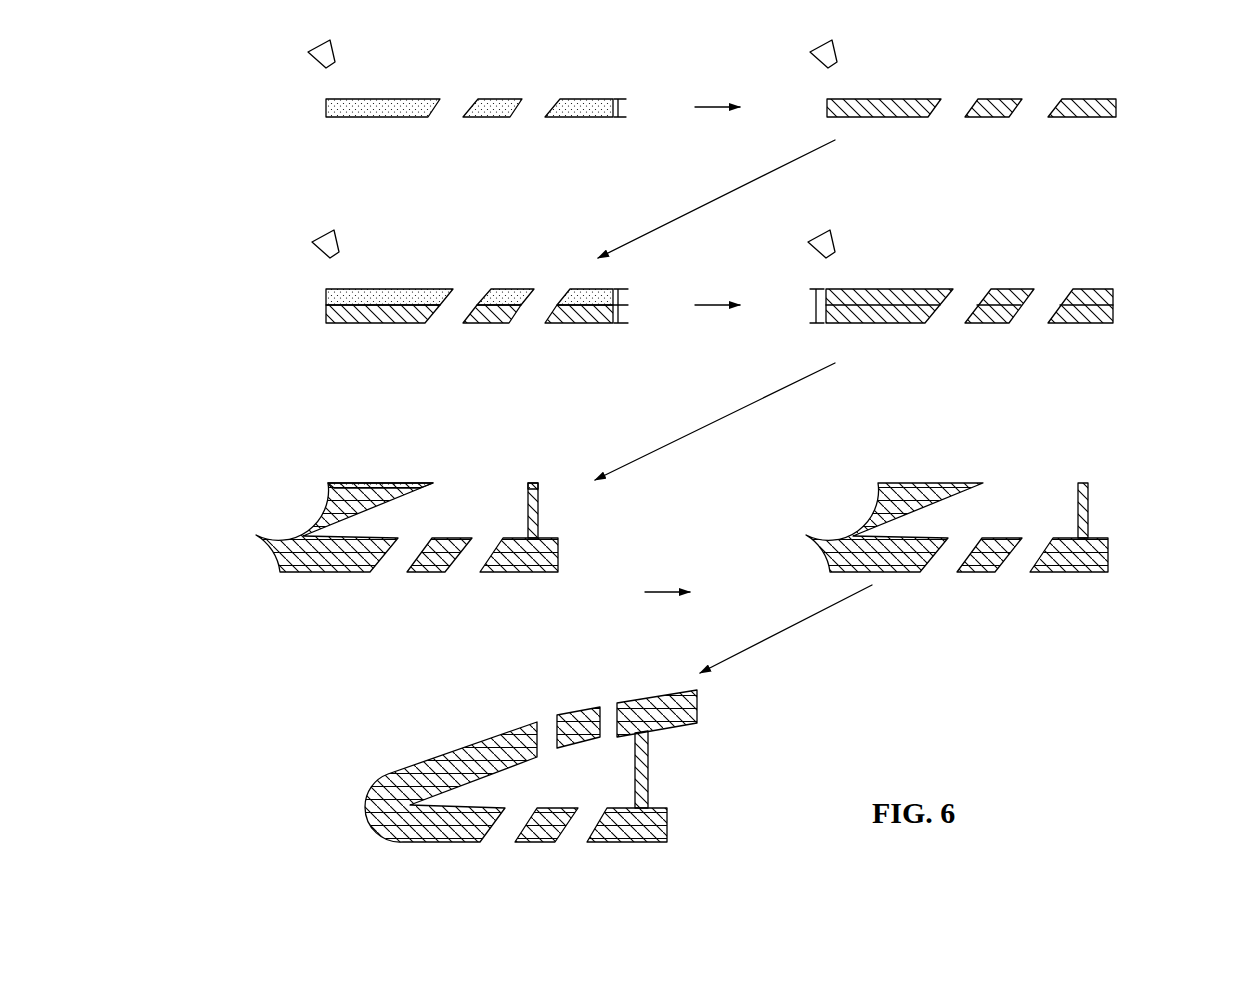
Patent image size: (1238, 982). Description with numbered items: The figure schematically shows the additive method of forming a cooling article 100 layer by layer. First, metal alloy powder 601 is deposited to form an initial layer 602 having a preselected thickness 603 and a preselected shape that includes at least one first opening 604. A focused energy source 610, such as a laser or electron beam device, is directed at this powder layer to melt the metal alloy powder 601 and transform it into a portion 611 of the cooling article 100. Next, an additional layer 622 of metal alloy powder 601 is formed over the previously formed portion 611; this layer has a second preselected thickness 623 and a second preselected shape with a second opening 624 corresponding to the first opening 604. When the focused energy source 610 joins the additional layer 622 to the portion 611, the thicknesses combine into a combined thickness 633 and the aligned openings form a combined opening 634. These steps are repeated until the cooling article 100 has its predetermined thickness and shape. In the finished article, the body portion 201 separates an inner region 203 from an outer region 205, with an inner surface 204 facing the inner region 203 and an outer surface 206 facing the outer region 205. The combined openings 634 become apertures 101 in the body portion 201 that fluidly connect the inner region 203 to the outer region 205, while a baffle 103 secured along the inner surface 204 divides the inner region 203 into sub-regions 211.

The cooling article 100 is at (376, 756).
The apertures 101 is at (391, 568).
The baffle 103 is at (648, 762).
The body portion 201 is at (407, 837).
The inner region 203 is at (561, 789).
The inner surface 204 is at (682, 725).
The outer region 205 is at (374, 922).
The outer surface 206 is at (628, 842).
The sub-regions 211 is at (606, 806).
The metal alloy powder 601 is at (377, 118).
The initial layer 602 is at (326, 105).
The preselected thickness 603 is at (626, 107).
The first opening 604 is at (461, 97).
The focused energy source 610 is at (337, 52).
The portion 611 is at (827, 107).
The additional layer 622 is at (326, 297).
The second preselected thickness 623 is at (628, 297).
The second opening 624 is at (471, 287).
The combined thickness 633 is at (810, 305).
The combined openings 634 is at (971, 287).